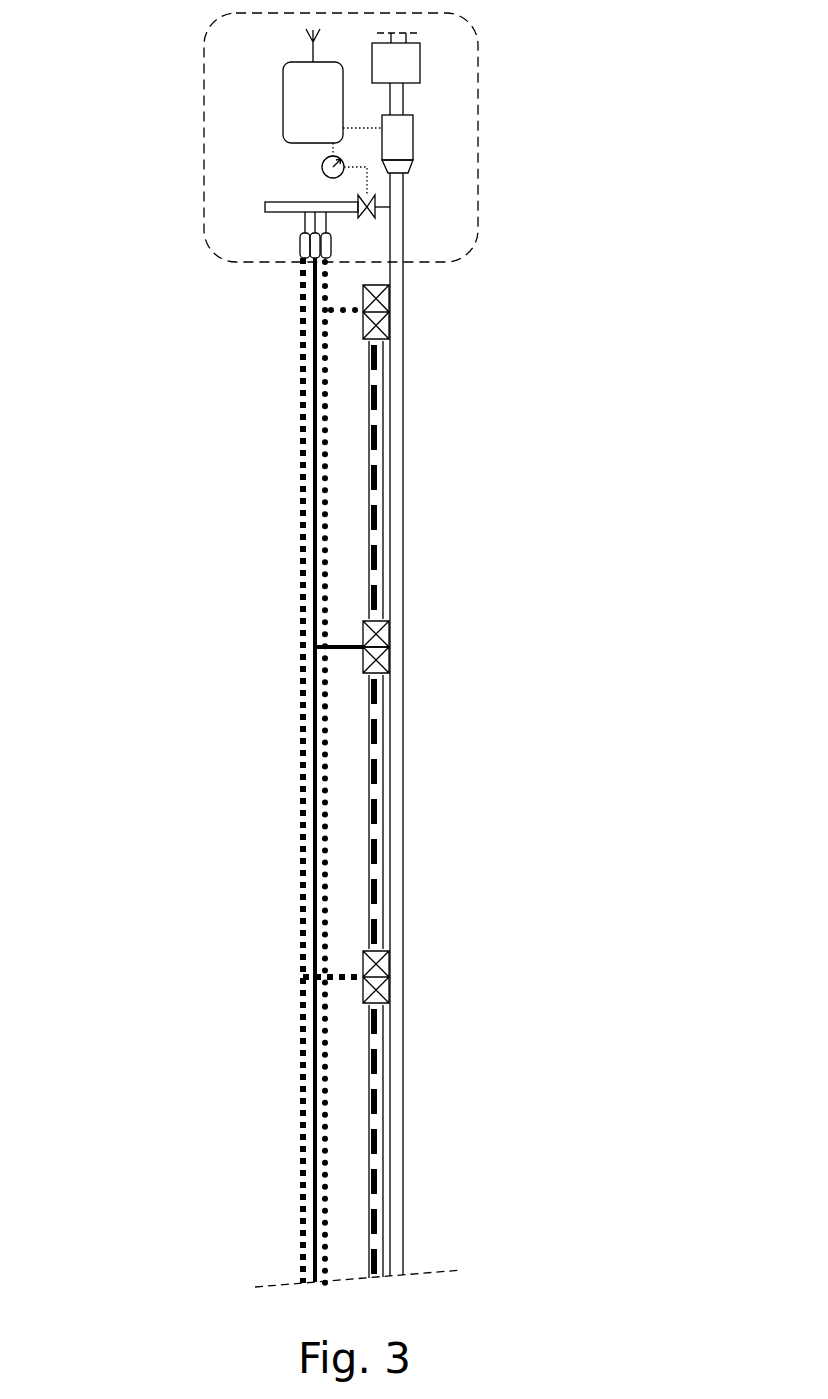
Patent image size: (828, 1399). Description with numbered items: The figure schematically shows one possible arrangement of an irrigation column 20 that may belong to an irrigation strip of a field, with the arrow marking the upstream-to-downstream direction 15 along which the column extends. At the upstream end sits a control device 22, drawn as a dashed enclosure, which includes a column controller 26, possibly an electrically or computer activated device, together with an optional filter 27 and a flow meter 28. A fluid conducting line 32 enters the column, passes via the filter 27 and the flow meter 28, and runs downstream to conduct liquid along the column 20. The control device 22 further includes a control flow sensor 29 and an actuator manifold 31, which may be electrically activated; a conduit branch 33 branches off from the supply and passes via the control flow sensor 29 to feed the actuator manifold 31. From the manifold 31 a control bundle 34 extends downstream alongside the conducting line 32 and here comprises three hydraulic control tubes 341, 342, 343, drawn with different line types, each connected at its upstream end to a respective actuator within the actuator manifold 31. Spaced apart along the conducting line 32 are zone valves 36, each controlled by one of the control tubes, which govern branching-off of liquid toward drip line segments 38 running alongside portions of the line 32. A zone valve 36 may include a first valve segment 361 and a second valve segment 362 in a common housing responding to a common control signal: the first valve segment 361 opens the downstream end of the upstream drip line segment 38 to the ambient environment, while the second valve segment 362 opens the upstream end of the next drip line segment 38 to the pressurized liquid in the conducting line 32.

The upstream-to-downstream direction 15 is at (72, 582).
The irrigation column 20 is at (553, 445).
The control device 22 is at (479, 130).
The column controller 26 is at (301, 107).
The filter 27 is at (384, 76).
The flow meter 28 is at (385, 149).
The control flow sensor 29 is at (357, 195).
The actuator manifold 31 is at (297, 247).
The fluid conducting line 32 is at (405, 369).
The conduit branch 33 is at (272, 201).
The control bundle 34 is at (274, 770).
The control tube 341 is at (300, 567).
The control tube 342 is at (313, 613).
The control tube 343 is at (320, 678).
The zone valve 36 is at (363, 305).
The first valve segment 361 is at (385, 634).
The second valve segment 362 is at (385, 660).
The drip line segment 38 is at (372, 490).